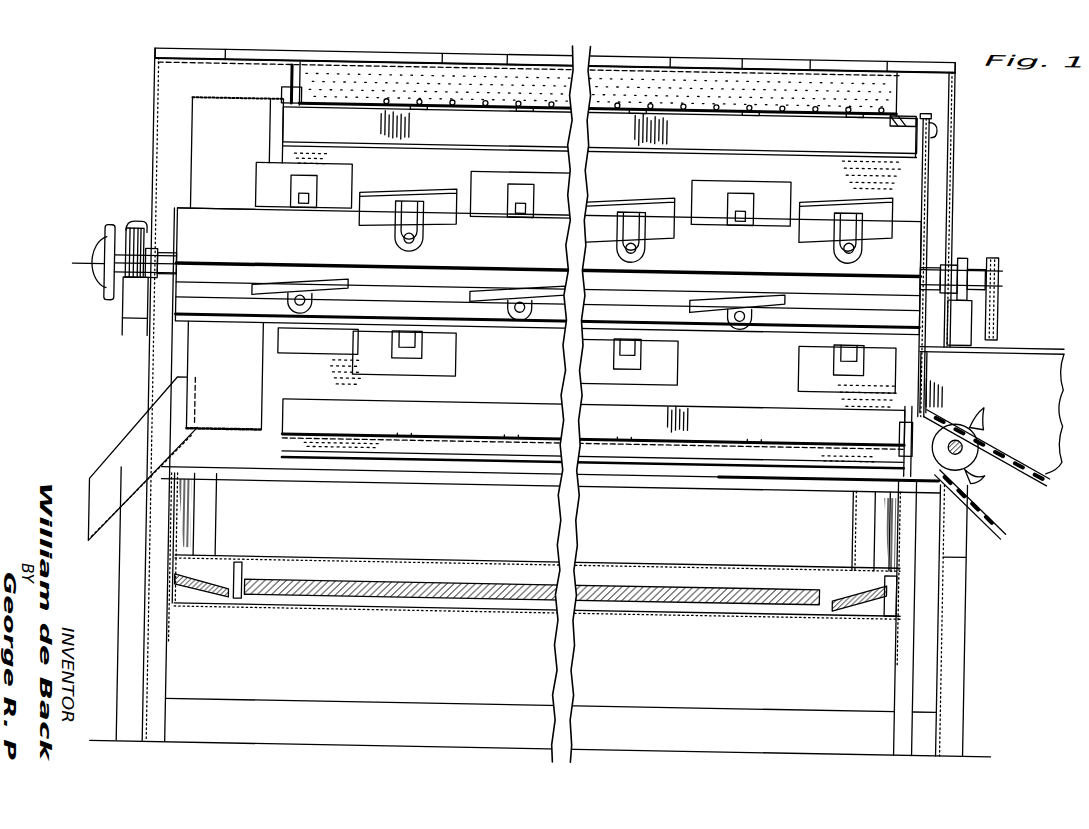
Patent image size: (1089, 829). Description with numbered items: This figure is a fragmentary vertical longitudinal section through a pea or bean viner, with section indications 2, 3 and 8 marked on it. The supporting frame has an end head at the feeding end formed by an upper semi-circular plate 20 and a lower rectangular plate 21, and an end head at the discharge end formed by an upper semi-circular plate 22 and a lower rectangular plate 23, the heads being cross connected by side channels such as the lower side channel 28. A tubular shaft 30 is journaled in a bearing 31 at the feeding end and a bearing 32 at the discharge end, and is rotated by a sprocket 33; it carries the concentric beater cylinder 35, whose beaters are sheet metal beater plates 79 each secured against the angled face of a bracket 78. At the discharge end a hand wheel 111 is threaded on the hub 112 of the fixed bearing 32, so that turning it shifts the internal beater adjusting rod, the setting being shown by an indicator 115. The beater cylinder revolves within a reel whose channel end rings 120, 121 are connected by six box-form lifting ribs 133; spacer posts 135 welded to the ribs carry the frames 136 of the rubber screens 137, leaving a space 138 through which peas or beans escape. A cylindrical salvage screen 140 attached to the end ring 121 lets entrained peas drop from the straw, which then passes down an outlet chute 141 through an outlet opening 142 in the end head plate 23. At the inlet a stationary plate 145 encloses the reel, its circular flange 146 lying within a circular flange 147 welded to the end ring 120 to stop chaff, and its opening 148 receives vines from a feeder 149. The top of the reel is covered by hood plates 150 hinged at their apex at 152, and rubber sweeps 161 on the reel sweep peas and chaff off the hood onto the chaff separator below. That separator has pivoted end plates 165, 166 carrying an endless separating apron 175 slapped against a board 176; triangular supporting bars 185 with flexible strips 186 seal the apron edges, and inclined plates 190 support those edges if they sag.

The section line 2- 2 is at (440, 12).
The section line 3- 3 is at (295, 158).
The section line 8- 8 is at (571, 218).
The upper semi-circular plate 20 is at (946, 184).
The lower rectangular plate 21 is at (948, 550).
The upper semi-circular plate 22 is at (148, 112).
The lower rectangular plate 23 is at (141, 577).
The lower side channel 28 is at (665, 714).
The tubular shaft 30 is at (174, 252).
The bearing 31 is at (960, 250).
The bearing 32 is at (140, 290).
The sprocket 33 is at (996, 266).
The beater cylinder 35 is at (222, 212).
The bracket 78 is at (422, 237).
The beater plate 79 is at (472, 174).
The hand wheel 111 is at (102, 233).
The hub 112 is at (102, 279).
The indicator 115 is at (120, 227).
The end ring 120 is at (892, 110).
The end ring 121 is at (286, 68).
The lifting rib 133 is at (700, 398).
The spacer post 135 is at (628, 112).
The screen frame 136 is at (888, 112).
The rubber screen 137 is at (709, 105).
The space 138 is at (430, 110).
The salvage screen 140 is at (235, 250).
The outlet chute 141 is at (104, 470).
The outlet opening 142 is at (144, 411).
The stationary plate 145 is at (932, 158).
The circular flange 146 is at (932, 124).
The circular flange 147 is at (927, 110).
The opening 148 is at (936, 350).
The feeder 149 is at (1027, 339).
The hood plate 150 is at (362, 56).
The hinge 152 is at (566, 44).
The sweep 161 is at (698, 72).
The end plate 165 is at (890, 659).
The end plate 166 is at (176, 651).
The separating apron 175 is at (440, 548).
The board 176 is at (518, 595).
The supporting bar 185 is at (194, 558).
The flexible strip 186 is at (231, 557).
The plate 190 is at (215, 594).